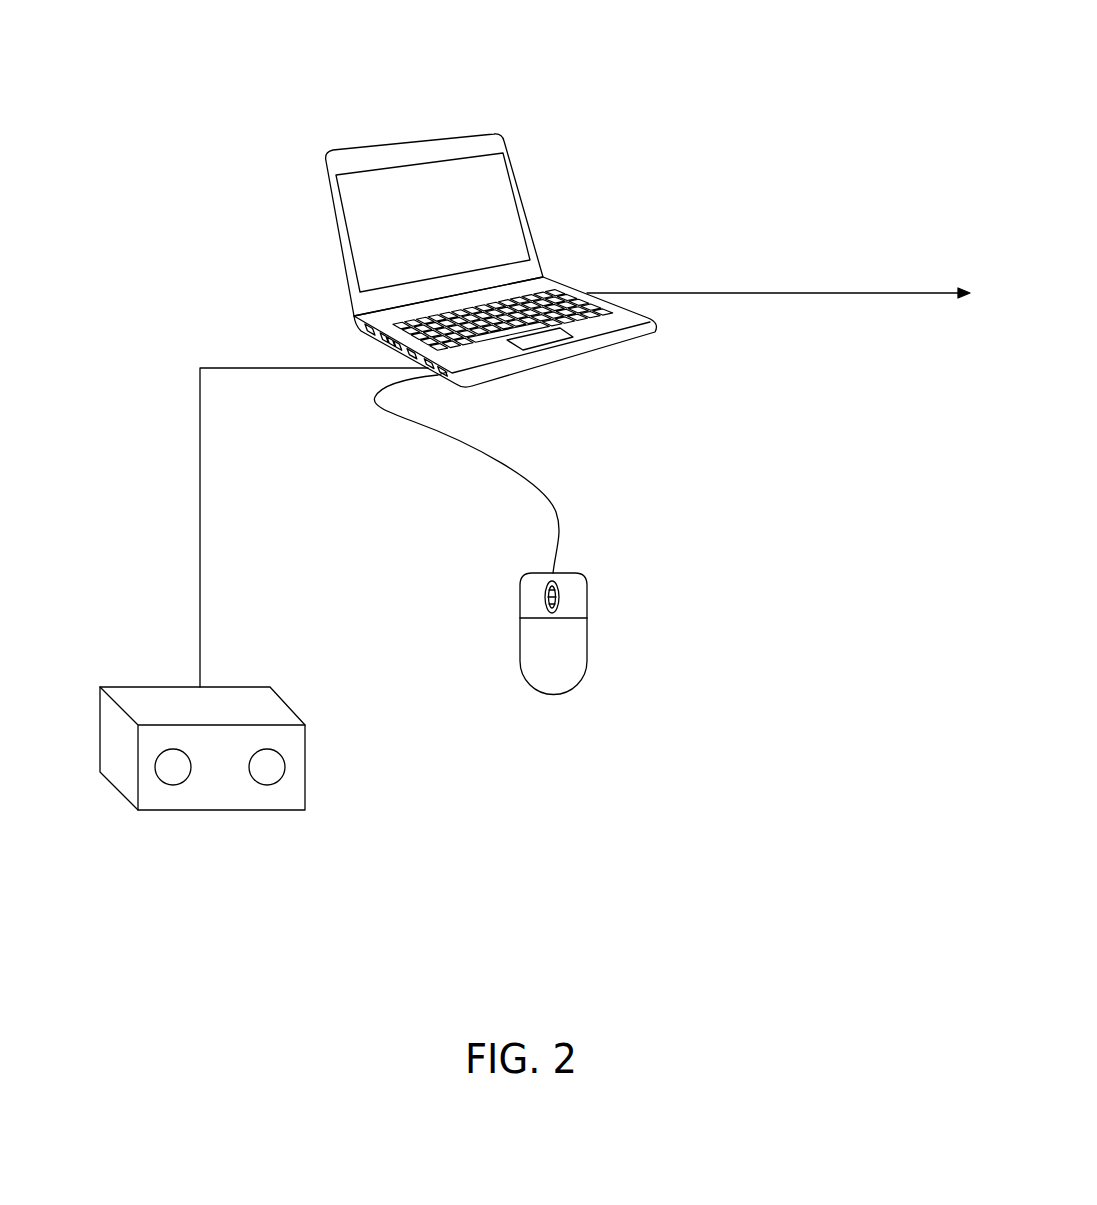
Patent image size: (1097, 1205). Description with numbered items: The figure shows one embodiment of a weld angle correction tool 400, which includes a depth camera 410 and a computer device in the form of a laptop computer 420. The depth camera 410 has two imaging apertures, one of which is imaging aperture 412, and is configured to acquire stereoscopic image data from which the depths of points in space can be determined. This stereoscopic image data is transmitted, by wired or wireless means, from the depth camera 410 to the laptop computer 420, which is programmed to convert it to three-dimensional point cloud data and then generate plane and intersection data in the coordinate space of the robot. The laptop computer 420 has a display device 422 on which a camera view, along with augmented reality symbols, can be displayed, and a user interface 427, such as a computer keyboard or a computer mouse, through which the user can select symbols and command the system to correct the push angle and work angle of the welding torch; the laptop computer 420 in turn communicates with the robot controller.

The weld angle correction tool 400 is at (724, 74).
The depth camera 410 is at (142, 685).
The imaging aperture 412 is at (172, 783).
The laptop computer 420 is at (569, 378).
The display device 422 is at (457, 230).
The user interface 427 is at (563, 688).